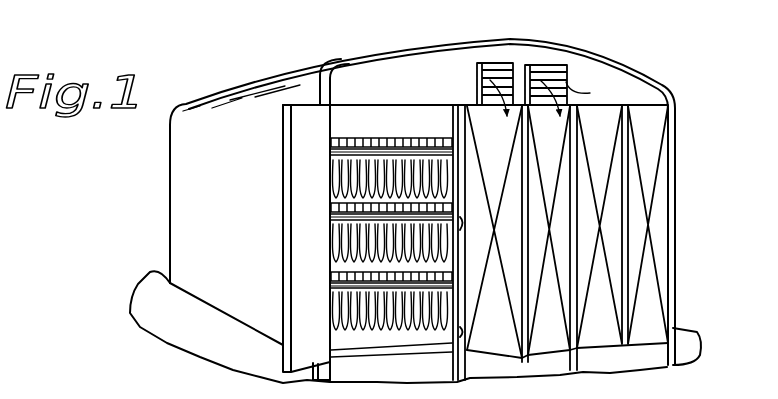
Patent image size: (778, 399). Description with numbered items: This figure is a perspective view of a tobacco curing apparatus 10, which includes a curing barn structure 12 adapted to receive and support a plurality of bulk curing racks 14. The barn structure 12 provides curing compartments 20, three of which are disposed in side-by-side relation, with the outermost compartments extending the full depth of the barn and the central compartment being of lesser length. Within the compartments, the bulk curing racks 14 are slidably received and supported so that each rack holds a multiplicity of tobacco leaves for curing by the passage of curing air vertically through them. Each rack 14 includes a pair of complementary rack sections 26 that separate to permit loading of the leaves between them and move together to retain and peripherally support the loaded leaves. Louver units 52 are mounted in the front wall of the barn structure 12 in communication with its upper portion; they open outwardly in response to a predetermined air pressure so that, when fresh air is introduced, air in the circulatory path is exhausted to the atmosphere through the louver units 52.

The tobacco curing apparatus 10 is at (270, 70).
The curing barn structure 12 is at (164, 218).
The bulk curing racks 14 is at (318, 161).
The curing compartments 20 is at (365, 106).
The complementary rack sections 26 is at (452, 200).
The louver units 52 is at (512, 60).